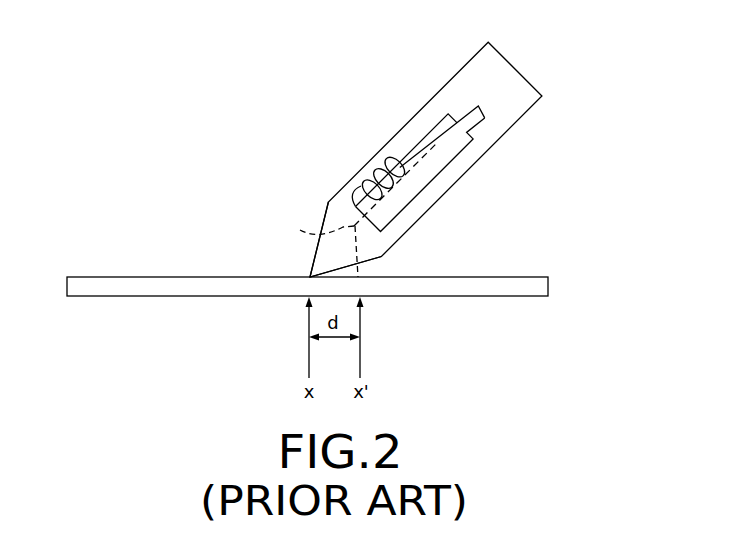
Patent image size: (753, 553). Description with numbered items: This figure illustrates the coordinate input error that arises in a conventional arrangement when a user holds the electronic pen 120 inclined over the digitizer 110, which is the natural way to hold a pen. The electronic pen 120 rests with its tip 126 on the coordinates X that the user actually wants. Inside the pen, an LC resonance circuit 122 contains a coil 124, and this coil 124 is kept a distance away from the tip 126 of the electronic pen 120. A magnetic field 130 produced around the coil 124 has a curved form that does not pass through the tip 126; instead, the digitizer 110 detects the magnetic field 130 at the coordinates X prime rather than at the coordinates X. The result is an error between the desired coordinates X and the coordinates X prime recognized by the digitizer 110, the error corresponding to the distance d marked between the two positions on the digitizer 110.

The digitizer 110 is at (548, 284).
The electronic pen 120 is at (542, 95).
The LC resonance circuit 122 is at (424, 188).
The coil 124 is at (388, 160).
The tip 126 is at (298, 268).
The magnetic field 130 is at (313, 236).